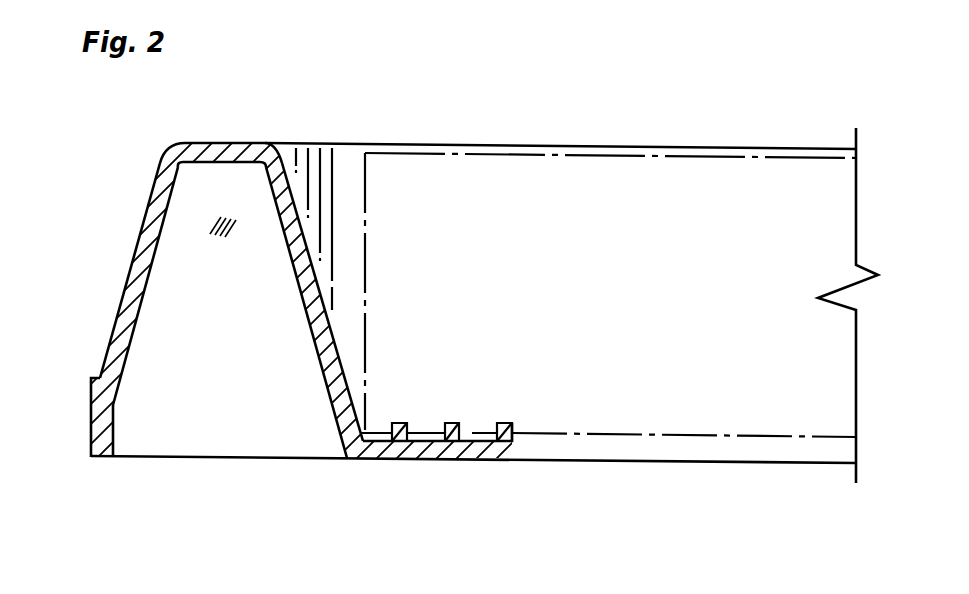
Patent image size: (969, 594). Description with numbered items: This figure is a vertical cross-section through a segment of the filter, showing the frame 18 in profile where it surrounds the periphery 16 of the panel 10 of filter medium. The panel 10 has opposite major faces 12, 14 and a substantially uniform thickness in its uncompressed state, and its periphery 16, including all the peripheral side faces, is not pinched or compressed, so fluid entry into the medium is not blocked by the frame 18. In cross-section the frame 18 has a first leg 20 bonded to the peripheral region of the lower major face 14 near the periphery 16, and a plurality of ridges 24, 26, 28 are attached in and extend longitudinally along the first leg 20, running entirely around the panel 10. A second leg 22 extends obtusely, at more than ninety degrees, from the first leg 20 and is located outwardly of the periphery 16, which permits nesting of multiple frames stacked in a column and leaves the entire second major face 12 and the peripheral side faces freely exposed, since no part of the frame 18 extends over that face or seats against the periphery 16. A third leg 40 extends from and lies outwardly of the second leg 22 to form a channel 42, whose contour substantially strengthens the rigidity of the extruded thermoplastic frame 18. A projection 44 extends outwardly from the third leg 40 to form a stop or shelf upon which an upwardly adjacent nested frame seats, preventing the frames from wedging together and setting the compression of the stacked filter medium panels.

The panel 10 is at (692, 205).
The major face 12 is at (600, 155).
The major face 14 is at (618, 435).
The periphery 16 is at (363, 198).
The frame 18 is at (142, 227).
The first leg 20 is at (421, 461).
The second leg 22 is at (311, 330).
The ridge 24 is at (505, 422).
The ridge 26 is at (452, 422).
The ridge 28 is at (398, 422).
The third leg 40 is at (119, 310).
The channel 42 is at (149, 471).
The projection 44 is at (95, 380).